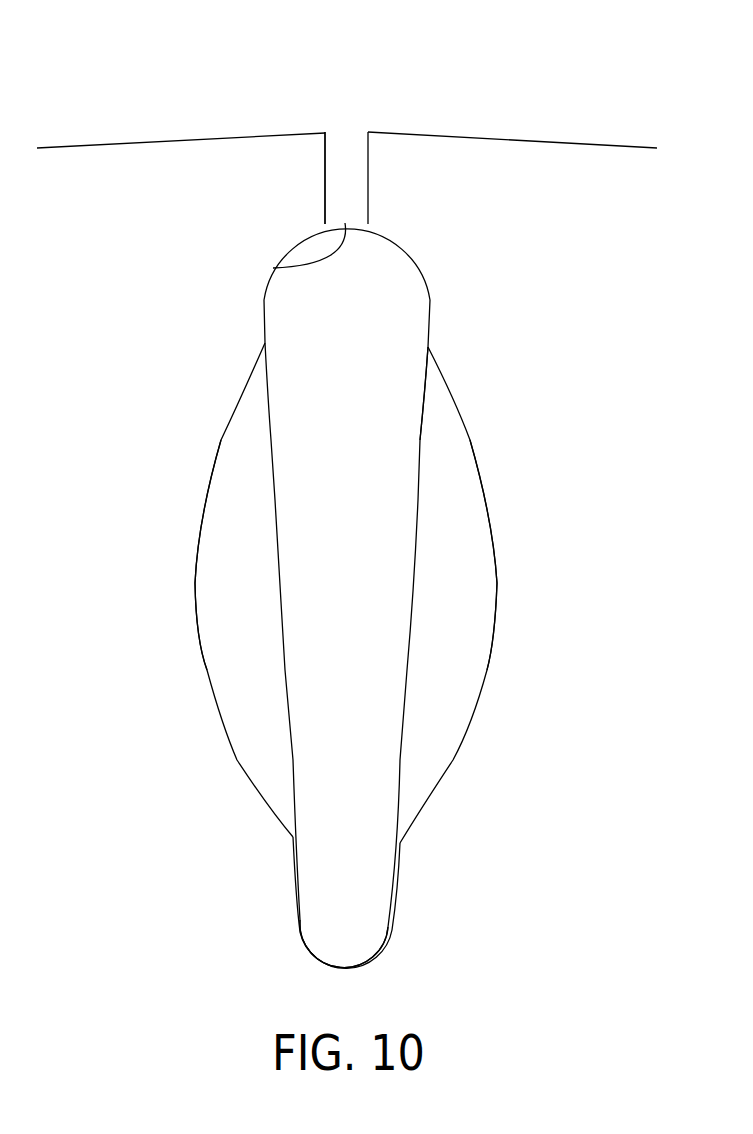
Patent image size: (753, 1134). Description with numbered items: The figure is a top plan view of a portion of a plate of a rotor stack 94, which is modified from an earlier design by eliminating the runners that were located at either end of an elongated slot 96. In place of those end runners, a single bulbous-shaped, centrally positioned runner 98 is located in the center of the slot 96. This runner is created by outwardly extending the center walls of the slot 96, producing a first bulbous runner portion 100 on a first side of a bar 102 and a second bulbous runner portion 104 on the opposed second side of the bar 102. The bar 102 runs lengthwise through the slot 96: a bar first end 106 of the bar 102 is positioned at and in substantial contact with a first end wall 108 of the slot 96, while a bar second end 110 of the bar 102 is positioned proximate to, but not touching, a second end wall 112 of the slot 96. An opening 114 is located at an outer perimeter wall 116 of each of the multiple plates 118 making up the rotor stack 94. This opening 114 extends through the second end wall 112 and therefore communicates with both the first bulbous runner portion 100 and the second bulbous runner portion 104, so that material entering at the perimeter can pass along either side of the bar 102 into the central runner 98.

The rotor stack 94 is at (613, 82).
The elongated slot 96 is at (433, 358).
The bulbous-shaped, centrally positioned runner 98 is at (497, 580).
The first bulbous runner portion 100 is at (472, 624).
The bar 102 is at (424, 405).
The second bulbous runner portion 104 is at (209, 584).
The bar first end 106 is at (323, 952).
The first end wall 108 is at (368, 968).
The bar second end 110 is at (273, 268).
The second end wall 112 is at (325, 180).
The opening 114 is at (346, 153).
The outer perimeter wall 116 is at (483, 133).
The plates 118 is at (193, 167).